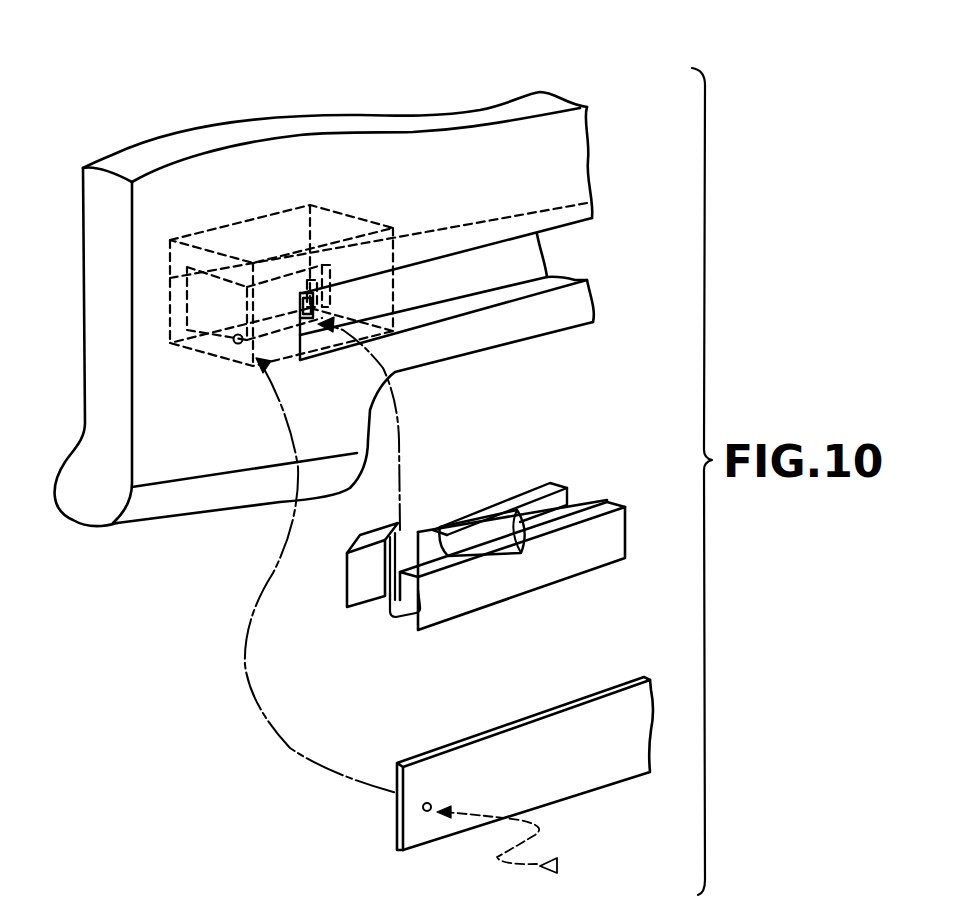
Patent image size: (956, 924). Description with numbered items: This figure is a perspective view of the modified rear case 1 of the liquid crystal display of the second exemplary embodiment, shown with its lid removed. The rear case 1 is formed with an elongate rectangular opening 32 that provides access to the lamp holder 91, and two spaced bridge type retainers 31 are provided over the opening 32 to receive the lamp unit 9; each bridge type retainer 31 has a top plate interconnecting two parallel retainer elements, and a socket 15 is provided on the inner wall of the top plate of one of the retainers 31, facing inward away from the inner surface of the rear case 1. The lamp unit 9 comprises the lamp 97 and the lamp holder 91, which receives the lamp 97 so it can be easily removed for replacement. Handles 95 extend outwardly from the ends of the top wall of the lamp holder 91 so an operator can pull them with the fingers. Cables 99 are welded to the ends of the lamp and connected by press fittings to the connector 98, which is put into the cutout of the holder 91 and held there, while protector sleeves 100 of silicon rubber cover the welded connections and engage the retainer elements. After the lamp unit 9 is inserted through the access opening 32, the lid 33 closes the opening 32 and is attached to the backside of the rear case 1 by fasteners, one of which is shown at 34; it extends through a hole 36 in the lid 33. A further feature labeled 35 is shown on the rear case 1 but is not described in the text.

The rear case 1 is at (420, 105).
The bridge type retainer 31 is at (170, 278).
The rectangular opening 32 is at (548, 286).
The socket 15 is at (320, 308).
The hole 35 is at (235, 343).
The lamp unit 9 is at (475, 570).
The lamp holder 91 is at (461, 610).
The connector 98 is at (395, 545).
The cables 99 is at (387, 615).
The handle 95 is at (405, 612).
The lamp 97 is at (584, 498).
The protector sleeve 100 is at (486, 522).
The lid 33 is at (587, 722).
The hole 36 is at (423, 813).
The fastener 34 is at (560, 864).